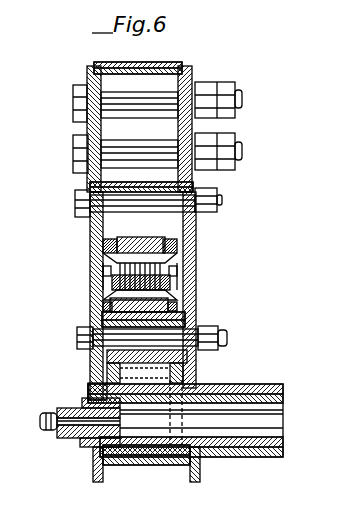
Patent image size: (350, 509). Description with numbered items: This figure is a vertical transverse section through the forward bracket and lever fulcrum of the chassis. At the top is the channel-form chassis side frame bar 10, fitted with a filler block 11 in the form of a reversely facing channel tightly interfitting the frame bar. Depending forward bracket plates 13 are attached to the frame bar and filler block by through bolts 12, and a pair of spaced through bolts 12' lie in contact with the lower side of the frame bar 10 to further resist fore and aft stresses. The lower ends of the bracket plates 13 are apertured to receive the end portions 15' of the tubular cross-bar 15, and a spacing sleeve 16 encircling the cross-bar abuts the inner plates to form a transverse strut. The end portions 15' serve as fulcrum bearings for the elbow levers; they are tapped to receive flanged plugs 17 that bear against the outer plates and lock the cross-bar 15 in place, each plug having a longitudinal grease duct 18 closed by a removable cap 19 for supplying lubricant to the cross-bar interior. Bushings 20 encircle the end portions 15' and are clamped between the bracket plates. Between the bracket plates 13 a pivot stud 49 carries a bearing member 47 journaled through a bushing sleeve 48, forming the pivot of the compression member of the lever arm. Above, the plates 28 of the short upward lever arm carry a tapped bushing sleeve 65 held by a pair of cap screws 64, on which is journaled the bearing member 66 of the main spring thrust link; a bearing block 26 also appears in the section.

The chassis side frame bar 10 is at (160, 62).
The filler blocks 11 is at (176, 128).
The through bolts 12 is at (176, 127).
The spaced through bolts 12' is at (165, 202).
The forward bracket plates 13 is at (88, 234).
The tapped bushing sleeve 65 is at (198, 240).
The bearing member 66 is at (153, 238).
The cap screws 64 is at (107, 266).
The lever arm plates 28 is at (195, 302).
The bearing member 47 is at (196, 313).
The pivot stud 49 is at (77, 333).
The bushing sleeve 48 is at (92, 363).
The bearing block 26 is at (157, 383).
The flanged plugs 17 is at (62, 398).
The spacing sleeve 16 is at (270, 388).
The tubular cross-bar 15 is at (228, 412).
The removable caps 19 is at (40, 430).
The oil or grease ducts 18 is at (70, 449).
The end portions of the cross-bar 15' is at (141, 473).
The bushings 20 is at (167, 462).